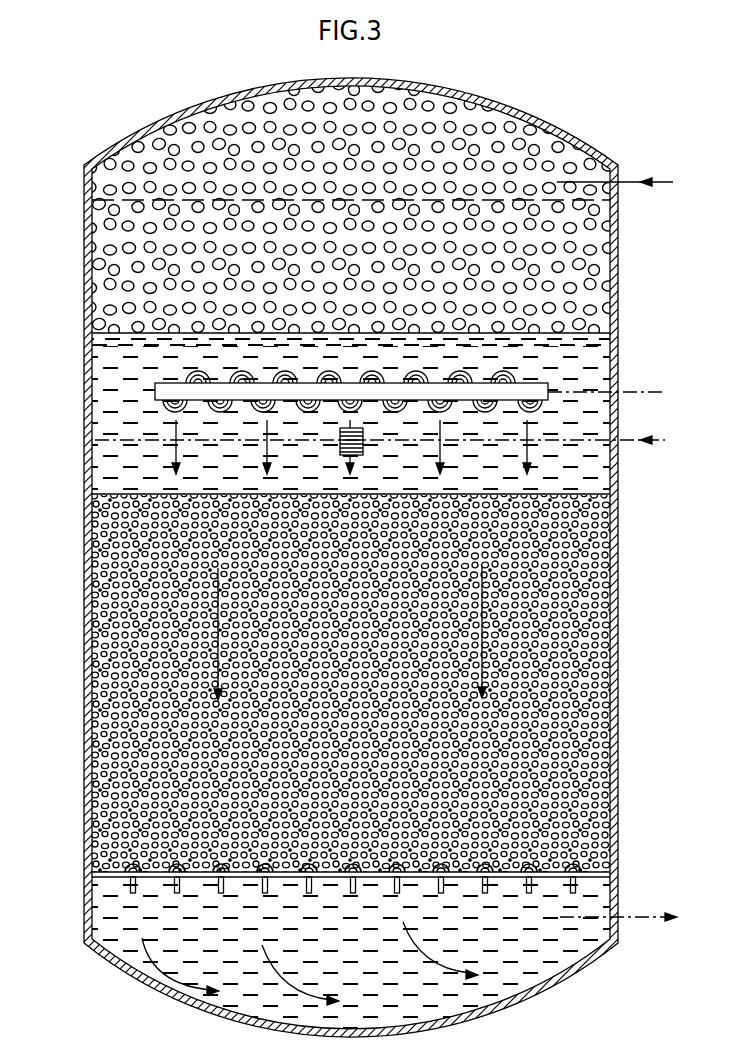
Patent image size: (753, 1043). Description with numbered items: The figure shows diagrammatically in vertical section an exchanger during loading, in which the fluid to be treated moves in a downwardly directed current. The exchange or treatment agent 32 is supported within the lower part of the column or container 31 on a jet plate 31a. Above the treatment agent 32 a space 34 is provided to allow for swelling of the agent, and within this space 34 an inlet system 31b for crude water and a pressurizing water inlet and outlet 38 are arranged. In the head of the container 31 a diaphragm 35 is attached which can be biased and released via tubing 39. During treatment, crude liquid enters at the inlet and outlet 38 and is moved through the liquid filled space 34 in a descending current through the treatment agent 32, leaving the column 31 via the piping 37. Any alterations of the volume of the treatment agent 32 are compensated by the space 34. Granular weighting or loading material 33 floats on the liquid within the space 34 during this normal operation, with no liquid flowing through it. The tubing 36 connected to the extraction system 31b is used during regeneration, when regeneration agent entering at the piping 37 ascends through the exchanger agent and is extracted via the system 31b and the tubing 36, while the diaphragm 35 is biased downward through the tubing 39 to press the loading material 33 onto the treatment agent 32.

The column or container 31 is at (620, 706).
The jet plate 31a is at (598, 867).
The inlet system 31b is at (158, 390).
The treatment agent 32 is at (597, 591).
The weighting or loading material 33 is at (118, 246).
The space 34 is at (102, 427).
The diaphragm 35 is at (541, 118).
The tubing 36 is at (652, 392).
The piping 37 is at (652, 919).
The pressurizing water inlet and outlet 38 is at (657, 445).
The tubing 39 is at (657, 181).